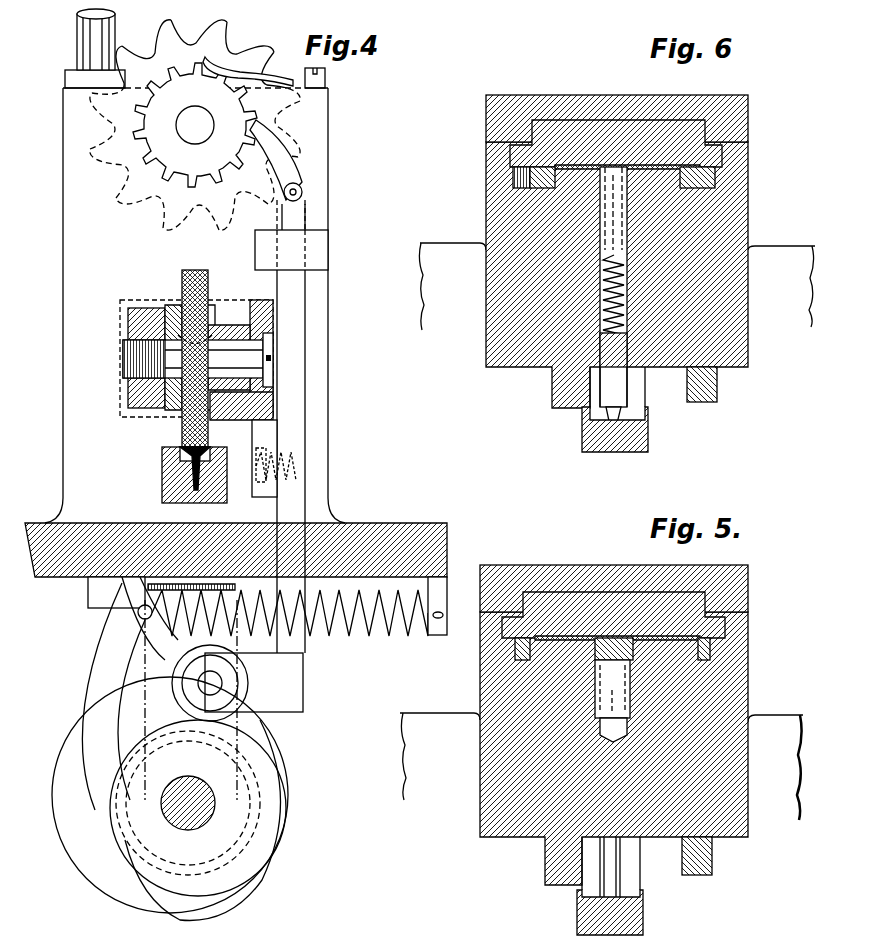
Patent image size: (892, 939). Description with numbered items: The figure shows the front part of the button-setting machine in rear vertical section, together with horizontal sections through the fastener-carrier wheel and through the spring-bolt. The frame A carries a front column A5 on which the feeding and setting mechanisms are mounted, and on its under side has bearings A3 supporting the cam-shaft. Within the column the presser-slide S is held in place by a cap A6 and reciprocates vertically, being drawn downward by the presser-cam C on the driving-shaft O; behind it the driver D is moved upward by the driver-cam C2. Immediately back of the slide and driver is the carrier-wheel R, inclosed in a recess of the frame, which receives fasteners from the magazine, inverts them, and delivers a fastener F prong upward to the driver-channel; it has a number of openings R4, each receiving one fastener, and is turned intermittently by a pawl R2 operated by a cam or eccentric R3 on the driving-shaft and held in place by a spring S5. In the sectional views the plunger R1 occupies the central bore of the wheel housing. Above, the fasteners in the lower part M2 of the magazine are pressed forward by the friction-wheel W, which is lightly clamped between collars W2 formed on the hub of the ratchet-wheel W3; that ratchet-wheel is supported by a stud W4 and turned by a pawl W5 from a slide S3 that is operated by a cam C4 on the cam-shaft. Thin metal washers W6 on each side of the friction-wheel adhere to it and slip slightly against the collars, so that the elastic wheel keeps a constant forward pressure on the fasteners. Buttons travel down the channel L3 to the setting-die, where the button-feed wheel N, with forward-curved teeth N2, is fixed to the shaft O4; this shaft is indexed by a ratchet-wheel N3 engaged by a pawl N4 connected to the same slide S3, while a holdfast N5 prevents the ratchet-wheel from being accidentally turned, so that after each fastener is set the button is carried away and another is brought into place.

In FIG. 4, the button channel L3 is at (115, 28).
In FIG. 4, the button-feed wheel N is at (222, 50).
In FIG. 4, the teeth N2 is at (240, 30).
In FIG. 4, the ratchet-wheel N3 is at (195, 125).
In FIG. 4, the shaft O4 is at (195, 125).
In FIG. 4, the pawl N4 is at (272, 128).
In FIG. 4, the holdfast N5 is at (294, 56).
In FIG. 4, the front column A5 is at (195, 295).
In FIG. 6, the front column A5 is at (484, 330).
In FIG. 5, the front column A5 is at (480, 805).
In FIG. 4, the friction-wheel W is at (187, 270).
In FIG. 4, the thin metal washer W6 is at (178, 300).
In FIG. 4, the collars W2 is at (215, 318).
In FIG. 4, the slide S3 is at (300, 345).
In FIG. 6, the slide S3 is at (687, 380).
In FIG. 5, the slide S3 is at (682, 852).
In FIG. 4, the stud W4 is at (198, 360).
In FIG. 4, the ratchet-wheel W3 is at (250, 405).
In FIG. 4, the pawl W5 is at (270, 434).
In FIG. 4, the fastener F is at (180, 448).
In FIG. 4, the lower part of the magazine M2 is at (162, 472).
In FIG. 6, the lower part of the magazine M2 is at (648, 432).
In FIG. 5, the lower part of the magazine M2 is at (643, 905).
In FIG. 4, the frame A is at (400, 525).
In FIG. 6, the frame A is at (617, 286).
In FIG. 5, the frame A is at (601, 766).
In FIG. 4, the presser-slide S is at (88, 595).
In FIG. 6, the presser-slide S is at (616, 143).
In FIG. 5, the presser-slide S is at (613, 615).
In FIG. 4, the bearings A3 is at (148, 585).
In FIG. 4, the driver-cam C2 is at (113, 696).
In FIG. 4, the pawl R2 is at (210, 683).
In FIG. 4, the cam or eccentric R3 is at (191, 700).
In FIG. 4, the driving-shaft O is at (190, 778).
In FIG. 4, the presser-cam C is at (170, 795).
In FIG. 4, the cam C4 is at (198, 820).
In FIG. 4, the spring S5 is at (378, 640).
In FIG. 6, the cap A6 is at (748, 118).
In FIG. 5, the cap A6 is at (748, 605).
In FIG. 6, the driver D is at (598, 165).
In FIG. 5, the driver D is at (606, 636).
In FIG. 6, the plunger spring R1 is at (617, 303).
In FIG. 6, the carrier-wheel R is at (536, 190).
In FIG. 5, the carrier-wheel R is at (611, 776).
In FIG. 5, the openings R4 is at (546, 645).